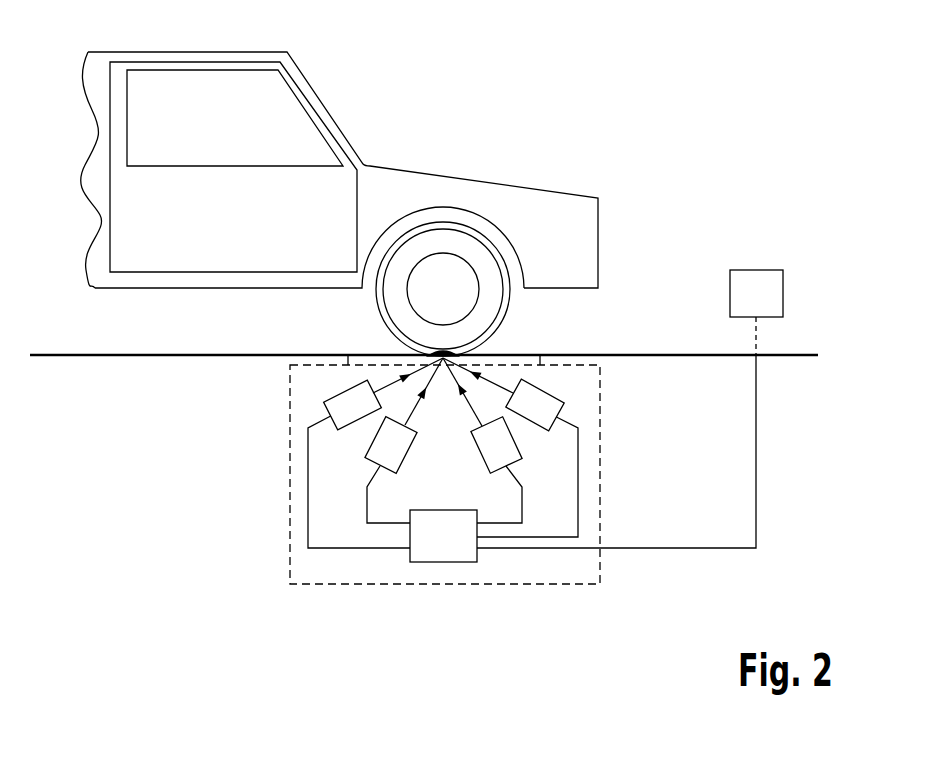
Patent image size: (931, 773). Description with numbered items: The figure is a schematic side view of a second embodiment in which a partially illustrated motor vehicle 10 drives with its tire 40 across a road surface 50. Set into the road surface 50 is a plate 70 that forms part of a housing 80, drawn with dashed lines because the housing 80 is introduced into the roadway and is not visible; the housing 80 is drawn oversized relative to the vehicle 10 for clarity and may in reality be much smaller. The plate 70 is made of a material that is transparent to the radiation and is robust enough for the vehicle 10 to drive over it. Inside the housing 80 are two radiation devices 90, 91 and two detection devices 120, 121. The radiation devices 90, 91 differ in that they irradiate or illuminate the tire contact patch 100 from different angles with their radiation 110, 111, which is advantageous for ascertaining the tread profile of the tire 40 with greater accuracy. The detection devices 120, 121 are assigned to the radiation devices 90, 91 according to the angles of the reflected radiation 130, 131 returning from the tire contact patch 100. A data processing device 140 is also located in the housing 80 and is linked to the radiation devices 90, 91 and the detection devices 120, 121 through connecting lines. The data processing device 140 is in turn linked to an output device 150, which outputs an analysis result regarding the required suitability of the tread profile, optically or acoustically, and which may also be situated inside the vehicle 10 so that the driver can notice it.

The motor vehicle 10 is at (433, 75).
The tire 40 is at (473, 230).
The road surface 50 is at (115, 354).
The plate 70 is at (523, 354).
The housing 80 is at (342, 585).
The radiation device 90 is at (327, 410).
The radiation device 91 is at (370, 447).
The tire contact patch 100 is at (345, 337).
The radiation 110 is at (440, 360).
The radiation 111 is at (440, 365).
The detection device 120 is at (562, 412).
The detection device 121 is at (518, 447).
The reflected radiation 130 is at (447, 360).
The reflected radiation 131 is at (446, 365).
The data processing device 140 is at (443, 563).
The output device 150 is at (756, 269).